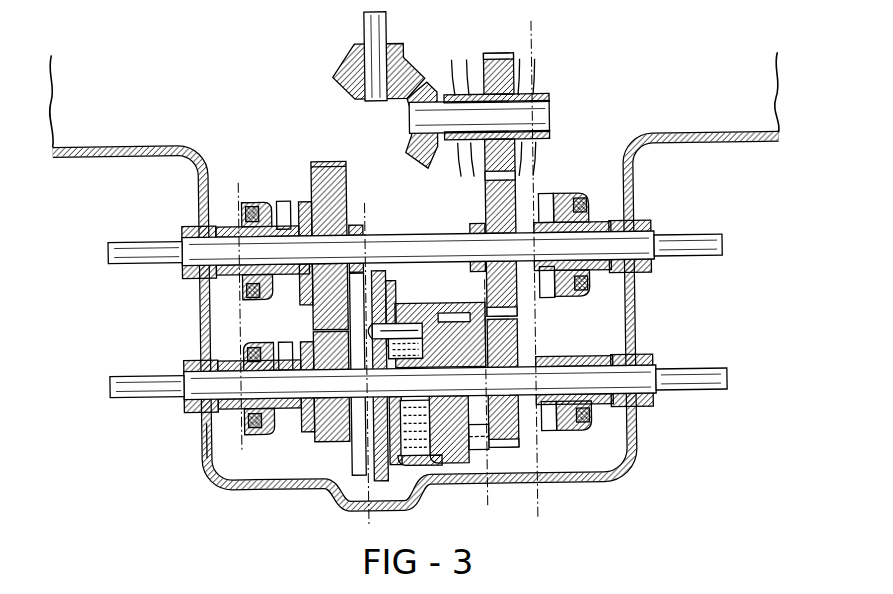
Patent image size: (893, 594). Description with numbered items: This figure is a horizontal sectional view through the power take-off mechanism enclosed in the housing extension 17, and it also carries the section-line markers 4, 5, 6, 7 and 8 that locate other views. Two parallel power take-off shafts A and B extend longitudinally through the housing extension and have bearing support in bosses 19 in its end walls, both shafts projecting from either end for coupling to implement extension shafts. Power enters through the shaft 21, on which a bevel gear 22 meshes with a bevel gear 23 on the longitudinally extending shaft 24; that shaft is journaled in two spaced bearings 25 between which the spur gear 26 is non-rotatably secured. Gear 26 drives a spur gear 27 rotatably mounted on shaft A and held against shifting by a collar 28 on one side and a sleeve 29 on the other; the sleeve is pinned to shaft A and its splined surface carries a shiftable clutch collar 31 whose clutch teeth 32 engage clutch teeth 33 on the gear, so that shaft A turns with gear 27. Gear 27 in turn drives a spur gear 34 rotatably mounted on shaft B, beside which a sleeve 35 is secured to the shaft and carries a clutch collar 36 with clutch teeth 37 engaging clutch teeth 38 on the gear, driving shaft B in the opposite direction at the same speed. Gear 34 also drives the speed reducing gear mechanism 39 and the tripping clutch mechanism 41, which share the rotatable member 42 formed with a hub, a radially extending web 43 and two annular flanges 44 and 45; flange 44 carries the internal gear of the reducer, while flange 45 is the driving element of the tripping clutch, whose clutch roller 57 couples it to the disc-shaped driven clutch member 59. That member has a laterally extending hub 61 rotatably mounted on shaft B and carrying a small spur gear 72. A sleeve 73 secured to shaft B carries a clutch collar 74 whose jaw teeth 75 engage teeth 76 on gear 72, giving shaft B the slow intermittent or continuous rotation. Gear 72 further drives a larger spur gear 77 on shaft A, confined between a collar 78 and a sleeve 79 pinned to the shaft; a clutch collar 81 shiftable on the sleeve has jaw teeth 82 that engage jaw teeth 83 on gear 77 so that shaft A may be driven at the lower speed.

The housing extension 17 is at (636, 448).
The bosses 19 is at (632, 225).
The shaft 21 is at (368, 30).
The bevel gear 22 is at (337, 79).
The bevel gear 23 is at (410, 108).
The shaft 24 is at (553, 118).
The bearings 25 is at (458, 95).
The spur gear 26 is at (490, 60).
The spur gear 27 is at (490, 197).
The collar 28 is at (475, 227).
The sleeve 29 is at (590, 225).
The clutch collar 31 is at (563, 199).
The clutch teeth 32 is at (548, 195).
The clutch teeth 33 is at (528, 288).
The spur gear 34 is at (517, 446).
The sleeve 35 is at (605, 407).
The clutch collar 36 is at (568, 434).
The clutch teeth 37 is at (548, 433).
The clutch teeth 38 is at (525, 336).
The speed reducing gear mechanism 39 is at (468, 445).
The tripping clutch mechanism 41 is at (405, 468).
The rotatable member 42 is at (430, 467).
The web 43 is at (440, 465).
The annular flange 44 is at (441, 303).
The annular flange 45 is at (393, 303).
The clutch roller 57 is at (408, 322).
The driven clutch member 59 is at (378, 456).
The hub 61 is at (357, 452).
The spur gear 72 is at (330, 441).
The sleeve 73 is at (206, 438).
The clutch collar 74 is at (250, 346).
The jaw teeth 75 is at (285, 341).
The teeth 76 is at (276, 437).
The spur gear 77 is at (348, 178).
The collar 78 is at (366, 231).
The sleeve 79 is at (231, 224).
The clutch collar 81 is at (250, 204).
The jaw teeth 82 is at (287, 200).
The jaw teeth 83 is at (312, 338).
The power take-off shaft A is at (700, 240).
The power take-off shaft B is at (700, 374).
The section line 4- 4 is at (535, 24).
The section line 5- 5 is at (240, 180).
The section line 6- 6 is at (108, 380).
The section line 7- 7 is at (485, 293).
The section line 8- 8 is at (366, 202).